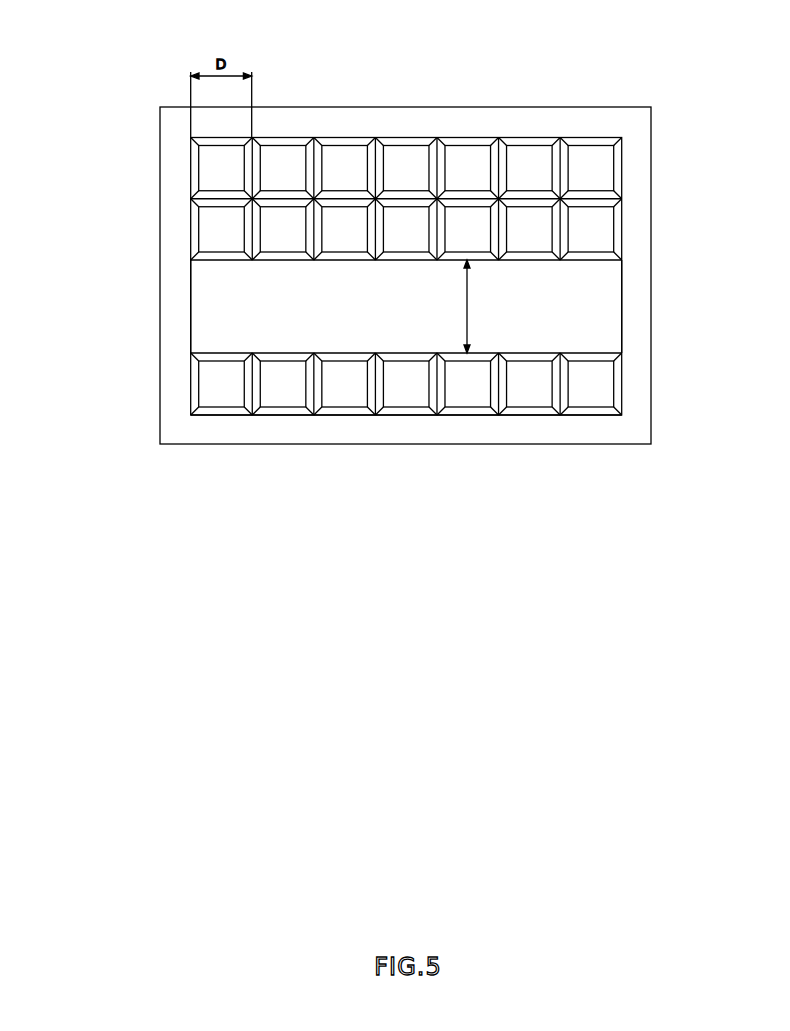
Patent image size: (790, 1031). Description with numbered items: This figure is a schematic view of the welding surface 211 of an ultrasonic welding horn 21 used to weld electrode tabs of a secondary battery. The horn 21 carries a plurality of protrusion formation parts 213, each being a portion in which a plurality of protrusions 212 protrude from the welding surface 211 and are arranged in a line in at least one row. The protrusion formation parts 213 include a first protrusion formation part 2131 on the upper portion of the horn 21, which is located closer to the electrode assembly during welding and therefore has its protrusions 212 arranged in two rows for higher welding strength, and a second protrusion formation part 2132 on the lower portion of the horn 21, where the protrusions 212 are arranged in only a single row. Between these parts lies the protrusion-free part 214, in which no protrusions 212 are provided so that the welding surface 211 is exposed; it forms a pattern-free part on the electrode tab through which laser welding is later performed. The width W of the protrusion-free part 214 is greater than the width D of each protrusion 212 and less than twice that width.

The horn 21 is at (567, 78).
The welding surface 211 is at (405, 122).
The protrusion 212 is at (280, 146).
The protrusion formation part 213 is at (330, 240).
The first protrusion formation part 2131 is at (359, 163).
The second protrusion formation part 2132 is at (359, 384).
The protrusion-free part 214 is at (607, 305).